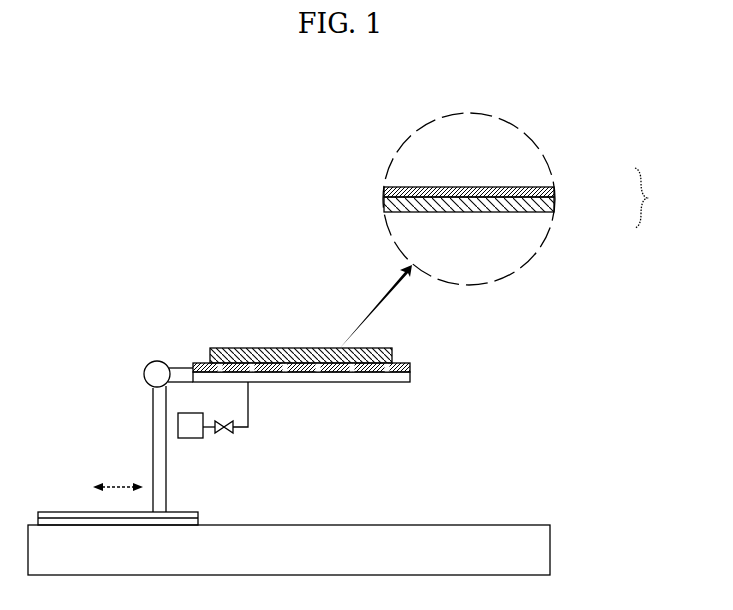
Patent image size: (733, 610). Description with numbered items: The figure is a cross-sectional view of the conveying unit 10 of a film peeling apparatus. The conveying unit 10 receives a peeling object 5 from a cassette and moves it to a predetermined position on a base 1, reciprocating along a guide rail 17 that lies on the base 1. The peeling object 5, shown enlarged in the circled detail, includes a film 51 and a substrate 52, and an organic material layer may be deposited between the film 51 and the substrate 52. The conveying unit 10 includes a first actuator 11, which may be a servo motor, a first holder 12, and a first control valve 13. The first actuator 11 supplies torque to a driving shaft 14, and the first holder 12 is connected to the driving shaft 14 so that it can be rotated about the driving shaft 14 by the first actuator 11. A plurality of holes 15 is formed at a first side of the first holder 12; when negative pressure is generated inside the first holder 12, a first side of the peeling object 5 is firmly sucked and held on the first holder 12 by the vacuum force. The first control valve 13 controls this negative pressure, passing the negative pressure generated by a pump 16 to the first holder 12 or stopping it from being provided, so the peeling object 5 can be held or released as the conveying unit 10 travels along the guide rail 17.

The base 1 is at (509, 525).
The peeling object 5 is at (298, 348).
The conveying unit 10 is at (144, 425).
The first actuator 11 is at (147, 367).
The first holder 12 is at (410, 375).
The first control valve 13 is at (224, 434).
The driving shaft 14 is at (180, 363).
The holes 15 is at (284, 373).
The pump 16 is at (193, 438).
The guide rail 17 is at (53, 512).
The film 51 is at (554, 190).
The substrate 52 is at (554, 204).